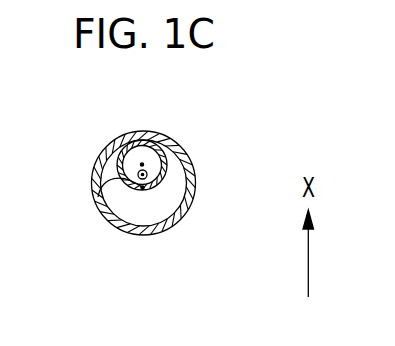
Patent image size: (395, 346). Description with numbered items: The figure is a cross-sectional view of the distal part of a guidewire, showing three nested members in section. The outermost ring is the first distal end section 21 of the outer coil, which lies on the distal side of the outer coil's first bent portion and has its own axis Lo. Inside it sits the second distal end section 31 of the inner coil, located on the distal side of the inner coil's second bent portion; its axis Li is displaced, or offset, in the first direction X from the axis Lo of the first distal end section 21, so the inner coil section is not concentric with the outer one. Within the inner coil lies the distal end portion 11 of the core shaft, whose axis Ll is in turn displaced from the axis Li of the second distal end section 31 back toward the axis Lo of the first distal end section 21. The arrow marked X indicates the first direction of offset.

The distal end portion 11 is at (95, 200).
The first distal end section 21 is at (138, 262).
The second distal end section 31 is at (184, 152).
The axis of the second distal end section Li is at (142, 163).
The axis of the first distal end section Lo is at (142, 188).
The axis of the distal end portion Ll is at (138, 172).